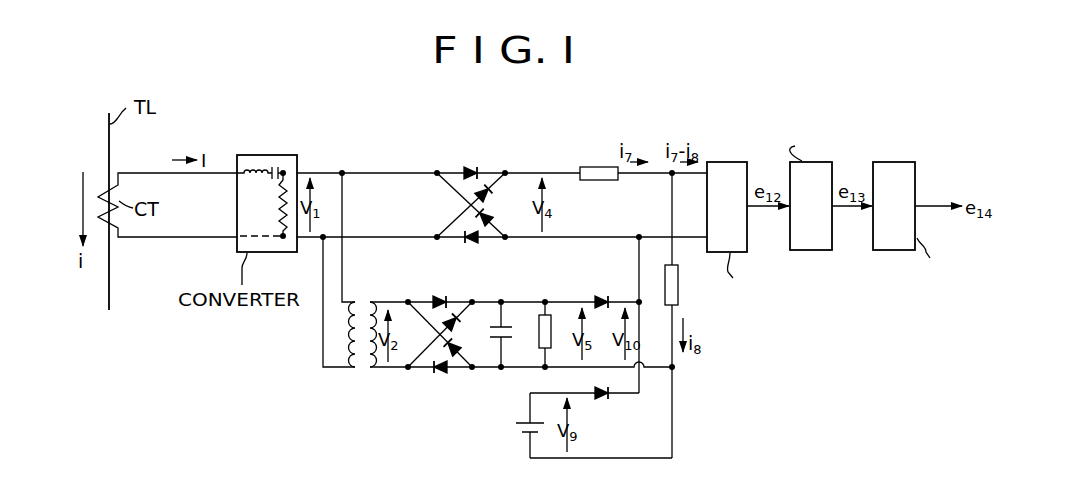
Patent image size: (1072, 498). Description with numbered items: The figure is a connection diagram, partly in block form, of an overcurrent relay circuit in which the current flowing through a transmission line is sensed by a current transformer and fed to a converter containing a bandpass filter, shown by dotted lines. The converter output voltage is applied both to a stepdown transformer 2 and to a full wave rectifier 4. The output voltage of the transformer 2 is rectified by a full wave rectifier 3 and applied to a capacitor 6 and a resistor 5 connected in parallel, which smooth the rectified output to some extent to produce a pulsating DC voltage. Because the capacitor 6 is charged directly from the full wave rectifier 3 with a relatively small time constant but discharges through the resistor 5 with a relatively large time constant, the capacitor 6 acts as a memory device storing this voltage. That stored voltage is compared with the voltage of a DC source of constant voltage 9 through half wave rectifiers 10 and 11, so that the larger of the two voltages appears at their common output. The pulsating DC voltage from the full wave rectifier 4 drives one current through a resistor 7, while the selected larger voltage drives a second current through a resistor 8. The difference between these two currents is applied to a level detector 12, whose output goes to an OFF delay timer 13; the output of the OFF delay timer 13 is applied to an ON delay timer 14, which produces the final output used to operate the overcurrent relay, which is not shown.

The stepdown transformer 2 is at (365, 312).
The full wave rectifier 3 is at (438, 298).
The full wave rectifier 4 is at (467, 168).
The resistor 5 is at (559, 316).
The capacitor 6 is at (507, 333).
The resistor 7 is at (592, 181).
The resistor 8 is at (679, 285).
The DC source of constant voltage 9 is at (516, 436).
The half wave rectifier 10 is at (601, 297).
The half wave rectifier 11 is at (601, 399).
The level detector 12 is at (788, 236).
The OFF delay timer 13 is at (893, 188).
The ON delay timer 14 is at (949, 226).